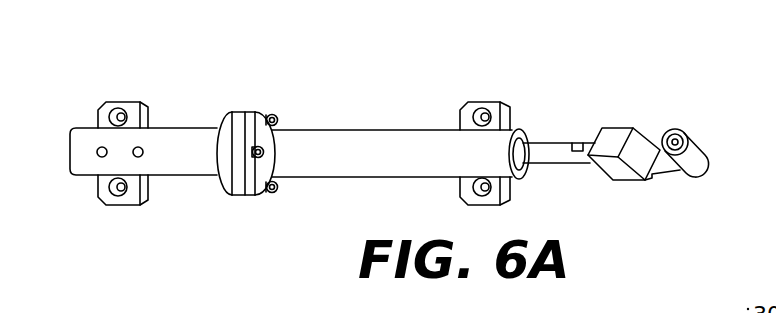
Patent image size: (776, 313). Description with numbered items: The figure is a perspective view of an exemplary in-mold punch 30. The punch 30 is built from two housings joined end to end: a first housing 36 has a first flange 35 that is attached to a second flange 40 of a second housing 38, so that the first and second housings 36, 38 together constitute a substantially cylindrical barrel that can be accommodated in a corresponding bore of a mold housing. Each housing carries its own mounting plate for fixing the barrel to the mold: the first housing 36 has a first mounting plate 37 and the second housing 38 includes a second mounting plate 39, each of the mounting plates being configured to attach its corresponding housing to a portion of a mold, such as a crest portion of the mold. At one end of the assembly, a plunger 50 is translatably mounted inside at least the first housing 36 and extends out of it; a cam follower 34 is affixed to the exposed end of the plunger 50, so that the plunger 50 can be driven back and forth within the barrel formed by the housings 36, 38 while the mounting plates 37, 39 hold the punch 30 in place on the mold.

The punch 30 is at (403, 77).
The cam follower 34 is at (672, 130).
The first flange 35 is at (263, 197).
The first housing 36 is at (355, 128).
The first mounting plate 37 is at (483, 100).
The second housing 38 is at (178, 128).
The second mounting plate 39 is at (122, 101).
The second flange 40 is at (238, 197).
The plunger 50 is at (550, 142).